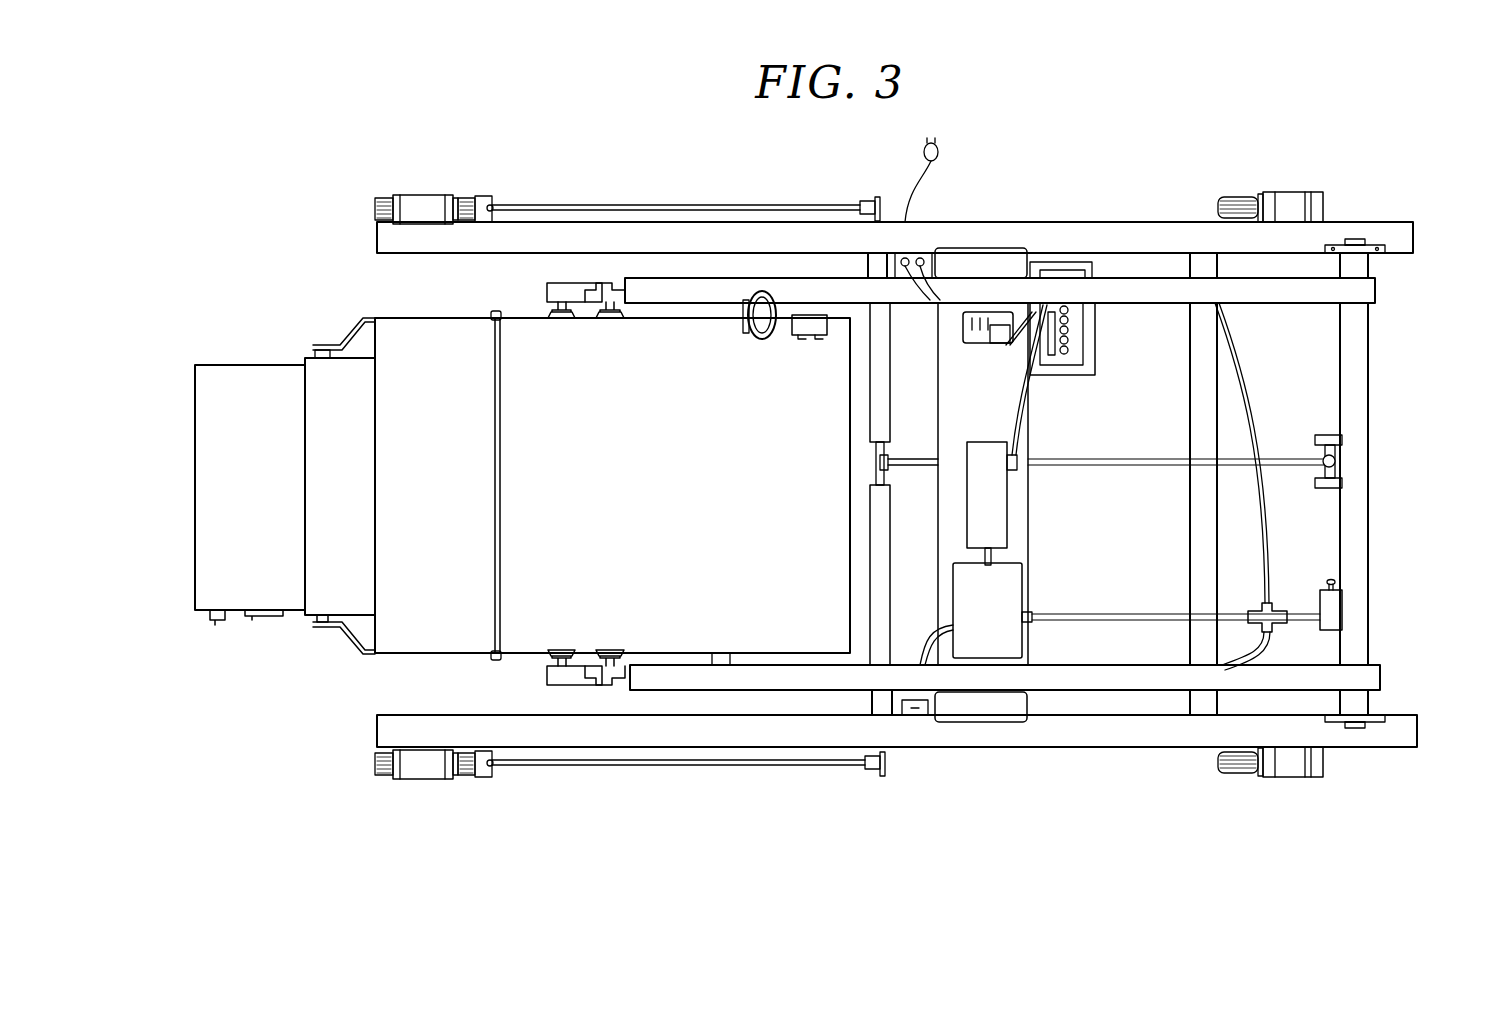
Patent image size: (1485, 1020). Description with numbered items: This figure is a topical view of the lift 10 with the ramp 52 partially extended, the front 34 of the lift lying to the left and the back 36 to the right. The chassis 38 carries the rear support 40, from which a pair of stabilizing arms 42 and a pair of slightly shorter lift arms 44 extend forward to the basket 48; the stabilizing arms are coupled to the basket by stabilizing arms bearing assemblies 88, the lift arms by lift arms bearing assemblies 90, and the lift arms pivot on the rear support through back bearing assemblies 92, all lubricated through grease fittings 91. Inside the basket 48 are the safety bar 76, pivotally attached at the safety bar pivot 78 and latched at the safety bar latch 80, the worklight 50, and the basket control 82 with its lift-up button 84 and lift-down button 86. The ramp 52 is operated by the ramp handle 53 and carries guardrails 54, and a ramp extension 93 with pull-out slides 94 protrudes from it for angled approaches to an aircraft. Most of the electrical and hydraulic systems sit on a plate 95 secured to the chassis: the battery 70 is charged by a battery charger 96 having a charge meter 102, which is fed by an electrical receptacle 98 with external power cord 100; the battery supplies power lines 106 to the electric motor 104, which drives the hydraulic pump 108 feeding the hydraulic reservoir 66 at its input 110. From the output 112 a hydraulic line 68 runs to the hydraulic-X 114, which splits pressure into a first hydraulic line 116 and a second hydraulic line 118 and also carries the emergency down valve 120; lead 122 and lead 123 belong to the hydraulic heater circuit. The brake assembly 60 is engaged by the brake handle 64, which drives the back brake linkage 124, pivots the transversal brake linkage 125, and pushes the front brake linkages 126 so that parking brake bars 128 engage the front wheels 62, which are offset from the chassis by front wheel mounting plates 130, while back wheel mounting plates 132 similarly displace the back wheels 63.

The lift 10 is at (265, 184).
The front 34 is at (218, 698).
The back 36 is at (1418, 450).
The chassis 38 is at (1100, 748).
The rear support 40 is at (1375, 625).
The stabilizing arms 42 is at (546, 292).
The lift arms 44 is at (715, 280).
The basket 48 is at (612, 485).
The worklight 50 is at (746, 333).
The ramp 52 is at (315, 620).
The ramp handle 53 is at (728, 657).
The guardrails 54 is at (348, 330).
The brake assembly 60 is at (515, 190).
The front wheels 62 is at (383, 198).
The back wheels 63 is at (1240, 197).
The brake handle 64 is at (1323, 456).
The hydraulic reservoir 66 is at (987, 610).
The hydraulic line 68 is at (1118, 612).
The battery 70 is at (1088, 330).
The safety bar 76 is at (500, 400).
The safety bar pivot 78 is at (490, 313).
The safety bar latch 80 is at (490, 660).
The basket control 82 is at (790, 333).
The lift-up button 84 is at (801, 340).
The lift-down button 86 is at (820, 340).
The stabilizing arms bearing assemblies 88 is at (585, 316).
The lift arms bearing assemblies 90 is at (606, 286).
The grease fittings 91 is at (556, 282).
The back bearing assemblies 92 is at (1372, 244).
The ramp extension 93 is at (240, 362).
The pull-out slides 94 is at (250, 618).
The plate 95 is at (930, 440).
The battery charger 96 is at (975, 344).
The electrical receptacle 98 is at (922, 252).
The external power cord 100 is at (908, 185).
The charge meter 102 is at (1000, 344).
The electric motor 104 is at (1018, 468).
The power lines 106 is at (1030, 405).
The hydraulic pump 108 is at (985, 442).
The input 110 is at (995, 560).
The output 112 is at (1032, 612).
The hydraulic-X 114 is at (1278, 610).
The first hydraulic line 116 is at (1248, 358).
The second hydraulic line 118 is at (1262, 655).
The emergency down valve 120 is at (1345, 606).
The lead 122 is at (960, 630).
The lead 123 is at (918, 665).
The back brake linkage 124 is at (1130, 458).
The transversal brake linkage 125 is at (878, 455).
The front brake linkages 126 is at (760, 202).
The parking brake bars 128 is at (482, 196).
The front wheel mounting plates 130 is at (425, 195).
The back wheel mounting plates 132 is at (1294, 192).